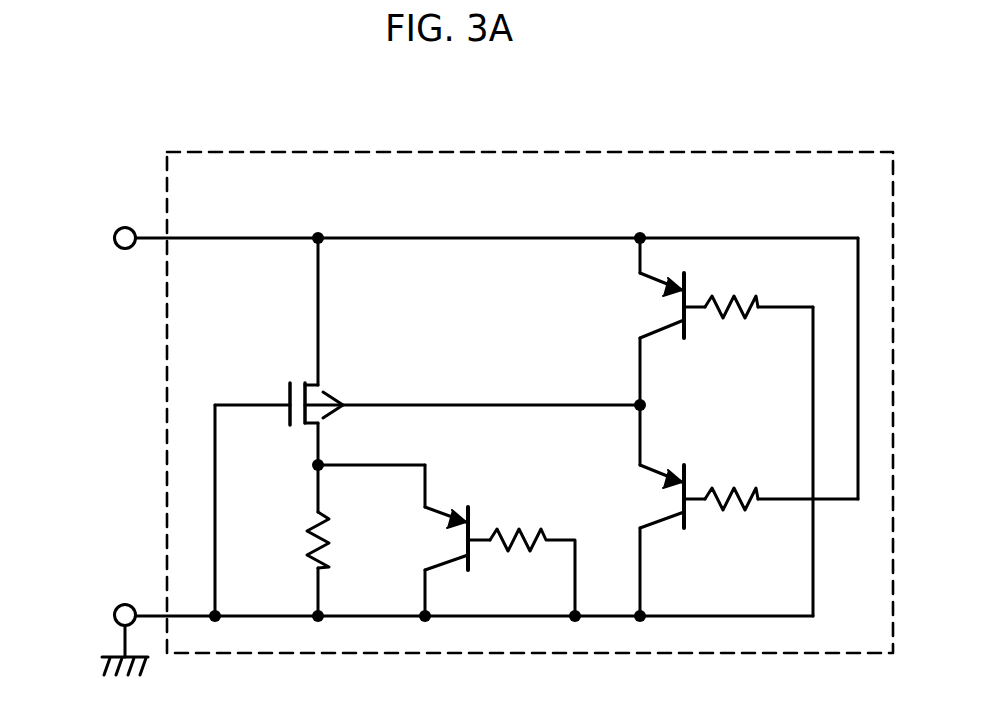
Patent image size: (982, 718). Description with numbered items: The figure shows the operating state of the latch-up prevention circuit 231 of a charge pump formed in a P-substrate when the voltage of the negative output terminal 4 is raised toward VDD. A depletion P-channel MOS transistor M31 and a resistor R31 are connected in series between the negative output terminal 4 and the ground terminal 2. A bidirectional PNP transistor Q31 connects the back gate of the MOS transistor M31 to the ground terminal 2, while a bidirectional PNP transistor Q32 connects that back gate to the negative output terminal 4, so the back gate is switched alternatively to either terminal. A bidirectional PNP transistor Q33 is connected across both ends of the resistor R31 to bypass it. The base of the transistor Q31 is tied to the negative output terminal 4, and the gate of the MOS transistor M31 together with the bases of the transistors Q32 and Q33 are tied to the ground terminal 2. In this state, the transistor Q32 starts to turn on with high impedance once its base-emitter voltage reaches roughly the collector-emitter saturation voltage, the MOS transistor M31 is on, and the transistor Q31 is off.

The latch-up prevention circuit 231 is at (541, 152).
The negative output terminal 4 is at (119, 229).
The ground terminal 2 is at (118, 606).
The depletion P-channel MOS transistor M31 is at (326, 399).
The resistor R31 is at (295, 540).
The bidirectional PNP-transistor Q31 is at (685, 507).
The bidirectional PNP-transistor Q32 is at (685, 296).
The bidirectional PNP-transistor Q33 is at (490, 561).